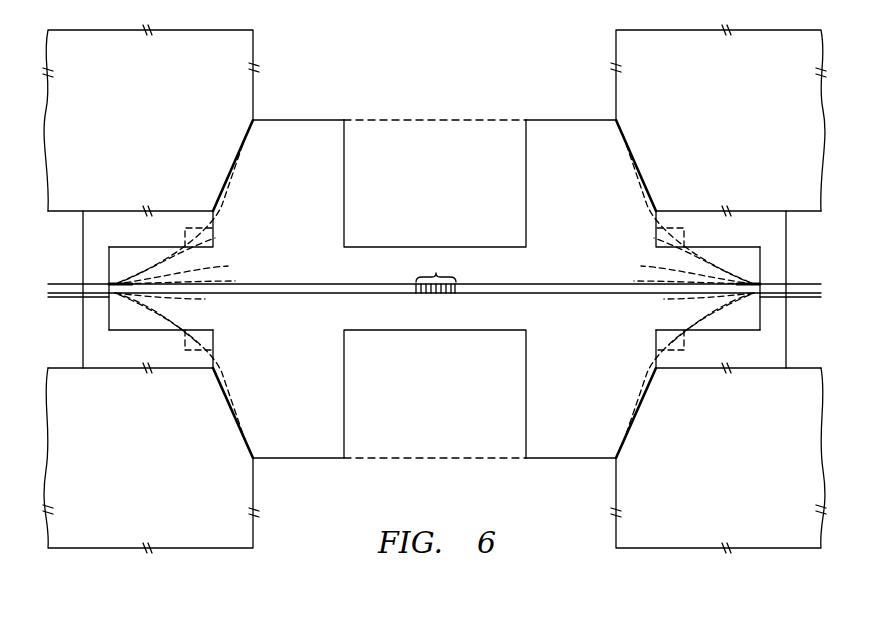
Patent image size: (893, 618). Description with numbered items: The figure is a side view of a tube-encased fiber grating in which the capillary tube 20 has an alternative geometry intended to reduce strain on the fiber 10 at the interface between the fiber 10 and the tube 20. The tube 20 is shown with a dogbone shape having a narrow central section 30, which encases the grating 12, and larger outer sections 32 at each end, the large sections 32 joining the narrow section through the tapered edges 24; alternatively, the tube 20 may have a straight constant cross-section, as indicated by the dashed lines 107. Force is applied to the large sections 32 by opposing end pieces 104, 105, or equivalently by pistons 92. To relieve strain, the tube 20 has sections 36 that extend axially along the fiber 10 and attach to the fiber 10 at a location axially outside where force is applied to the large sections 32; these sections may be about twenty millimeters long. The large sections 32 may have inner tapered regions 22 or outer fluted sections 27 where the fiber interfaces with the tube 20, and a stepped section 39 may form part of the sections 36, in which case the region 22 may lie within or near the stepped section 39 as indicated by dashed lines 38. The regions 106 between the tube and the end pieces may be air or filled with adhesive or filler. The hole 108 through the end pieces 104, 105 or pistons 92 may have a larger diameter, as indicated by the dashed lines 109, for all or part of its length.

The fiber 10 is at (322, 283).
The tube-encased grating 12 is at (436, 272).
The capillary tube 20 is at (312, 118).
The inner tapered regions 22 is at (124, 278).
The tapered edge 24 is at (242, 158).
The outer fluted sections 27 is at (219, 269).
The narrow central section 30 is at (408, 250).
The large outer sections 32 is at (302, 193).
The axially extending sections 36 is at (150, 257).
The dashed lines 38 is at (203, 298).
The stepped section 39 is at (199, 228).
The pistons 92 is at (91, 453).
The end piece 104 is at (137, 73).
The end piece 105 is at (702, 80).
The regions 106 is at (138, 358).
The dashed lines 107 is at (404, 118).
The hole 108 is at (60, 284).
The dashed lines 109 is at (65, 210).